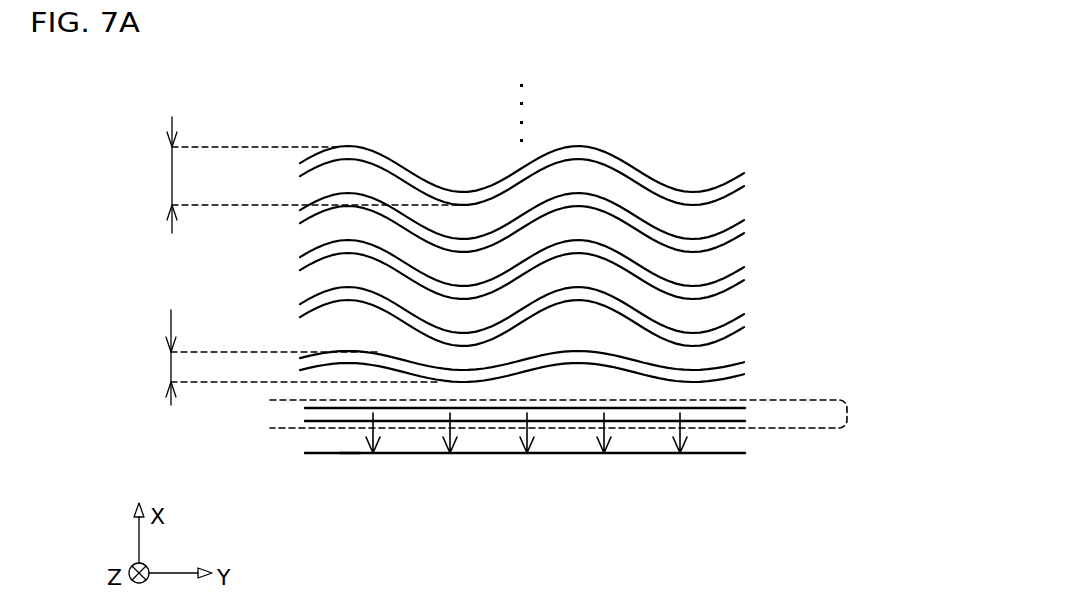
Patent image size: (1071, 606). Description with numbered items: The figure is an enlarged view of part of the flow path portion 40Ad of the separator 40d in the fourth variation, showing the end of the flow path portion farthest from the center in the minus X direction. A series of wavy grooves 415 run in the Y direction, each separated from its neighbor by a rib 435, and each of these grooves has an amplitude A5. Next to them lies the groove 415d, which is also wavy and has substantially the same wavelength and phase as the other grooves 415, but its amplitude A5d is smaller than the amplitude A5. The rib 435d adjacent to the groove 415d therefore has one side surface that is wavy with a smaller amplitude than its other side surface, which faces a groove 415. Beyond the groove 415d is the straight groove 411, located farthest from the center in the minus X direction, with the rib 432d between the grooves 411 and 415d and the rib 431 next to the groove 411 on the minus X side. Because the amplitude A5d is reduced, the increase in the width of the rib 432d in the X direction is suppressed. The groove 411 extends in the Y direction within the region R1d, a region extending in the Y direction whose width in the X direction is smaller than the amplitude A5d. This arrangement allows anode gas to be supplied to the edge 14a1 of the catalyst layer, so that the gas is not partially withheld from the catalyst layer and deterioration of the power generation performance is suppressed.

The rib 435 is at (306, 185).
The groove 415 is at (558, 246).
The rib 435d is at (306, 337).
The groove 415d is at (747, 365).
The amplitude A5 is at (303, 175).
The amplitude A5d is at (277, 357).
The rib 432d is at (325, 388).
The groove 411 is at (747, 415).
The region R1d is at (580, 414).
The rib 431 is at (330, 444).
The edge 14a1 is at (352, 454).
The separator 40d is at (763, 117).
The flow path portion 40Ad is at (851, 182).